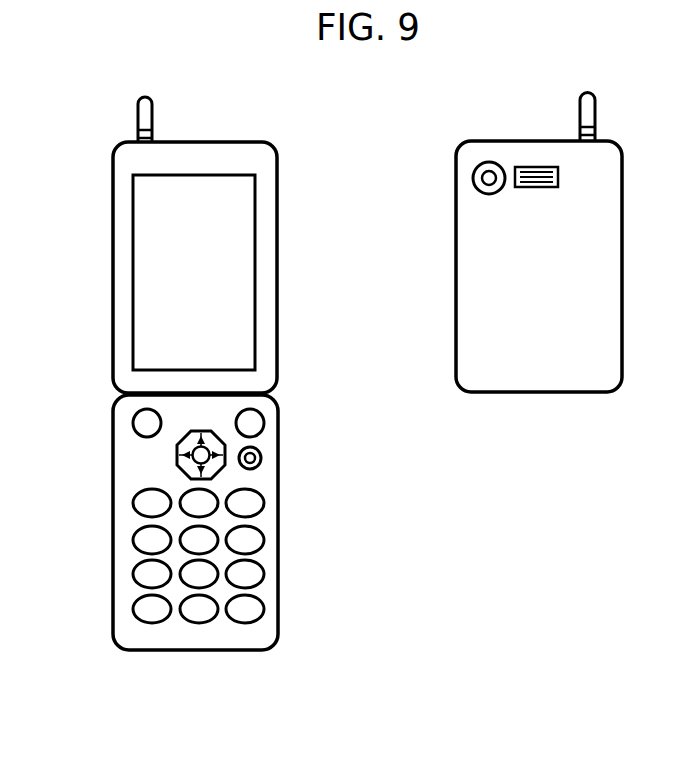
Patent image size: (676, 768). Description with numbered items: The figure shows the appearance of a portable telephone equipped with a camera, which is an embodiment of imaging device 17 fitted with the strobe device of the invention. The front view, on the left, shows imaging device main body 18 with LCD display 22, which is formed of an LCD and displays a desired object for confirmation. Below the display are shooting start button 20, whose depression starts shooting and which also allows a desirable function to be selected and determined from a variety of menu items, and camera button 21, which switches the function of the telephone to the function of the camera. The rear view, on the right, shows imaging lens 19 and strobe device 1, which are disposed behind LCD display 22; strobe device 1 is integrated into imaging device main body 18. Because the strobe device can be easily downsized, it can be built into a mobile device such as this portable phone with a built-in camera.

The strobe device 1 is at (532, 167).
The imaging device 17 is at (278, 142).
The imaging device main body 18 is at (243, 650).
The imaging lens 19 is at (489, 177).
The shooting start button 20 is at (205, 450).
The camera button 21 is at (262, 462).
The LCD display 22 is at (158, 252).